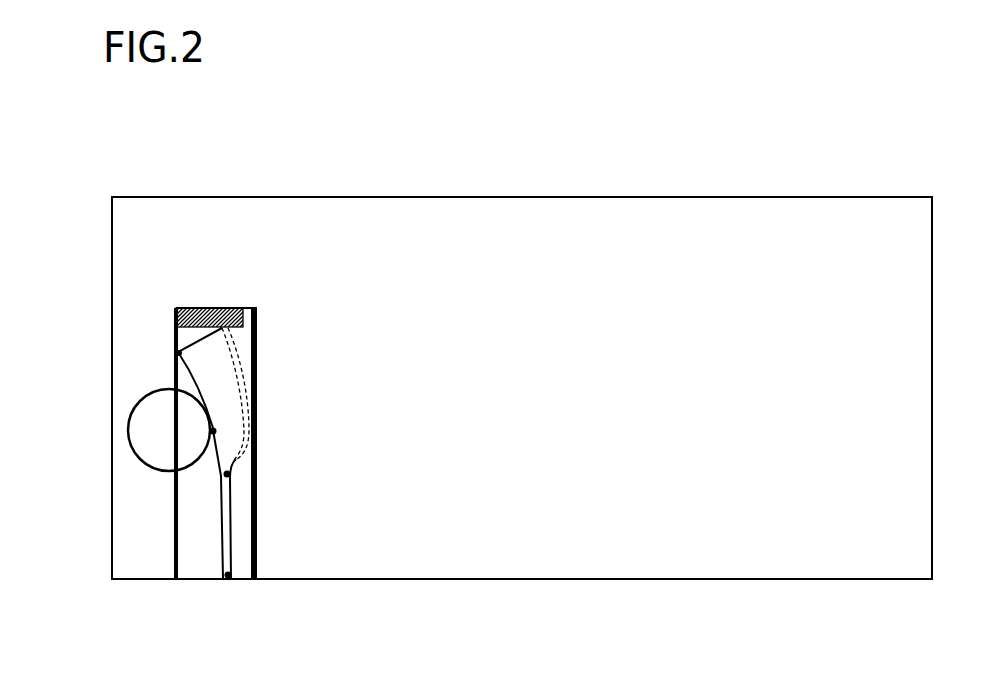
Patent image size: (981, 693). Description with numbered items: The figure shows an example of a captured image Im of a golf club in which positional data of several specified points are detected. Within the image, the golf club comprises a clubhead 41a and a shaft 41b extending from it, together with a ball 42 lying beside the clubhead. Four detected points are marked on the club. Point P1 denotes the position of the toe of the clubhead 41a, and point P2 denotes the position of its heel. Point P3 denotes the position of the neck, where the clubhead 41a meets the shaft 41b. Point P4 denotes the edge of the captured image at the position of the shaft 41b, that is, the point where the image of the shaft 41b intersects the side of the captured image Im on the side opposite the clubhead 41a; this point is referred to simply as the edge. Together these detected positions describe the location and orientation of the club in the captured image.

The image / recording medium area Im is at (592, 560).
The clubhead 41a is at (188, 338).
The shaft 41b is at (227, 552).
The roller 42 is at (150, 425).
The position of the toe P1 is at (178, 353).
The position of the heel P2 is at (213, 435).
The position of the neck P3 is at (227, 475).
The edge of the captured image at the position of the shaft P4 is at (229, 578).